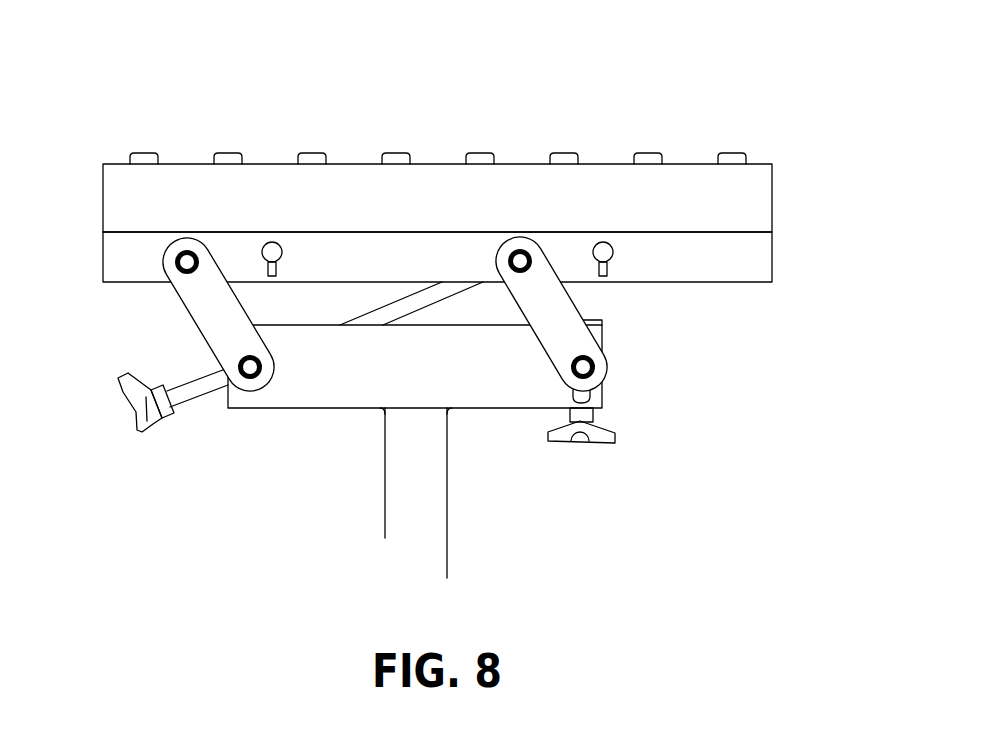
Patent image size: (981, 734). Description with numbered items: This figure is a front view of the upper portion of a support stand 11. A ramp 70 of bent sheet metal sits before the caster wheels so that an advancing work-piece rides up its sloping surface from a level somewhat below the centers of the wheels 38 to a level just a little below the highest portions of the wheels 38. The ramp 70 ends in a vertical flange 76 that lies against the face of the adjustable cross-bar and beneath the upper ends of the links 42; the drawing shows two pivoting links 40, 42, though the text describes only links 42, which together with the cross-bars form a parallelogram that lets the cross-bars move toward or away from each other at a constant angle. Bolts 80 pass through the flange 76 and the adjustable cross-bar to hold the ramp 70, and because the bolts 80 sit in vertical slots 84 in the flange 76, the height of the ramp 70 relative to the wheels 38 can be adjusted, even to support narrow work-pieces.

The support stand 11 is at (143, 99).
The wheels 38 is at (730, 157).
The first pivot link 40 is at (207, 313).
The links 42 is at (567, 322).
The ramp 70 is at (740, 203).
The vertical flange 76 is at (740, 253).
The bolts 80 is at (272, 250).
The vertical slots 84 is at (263, 247).